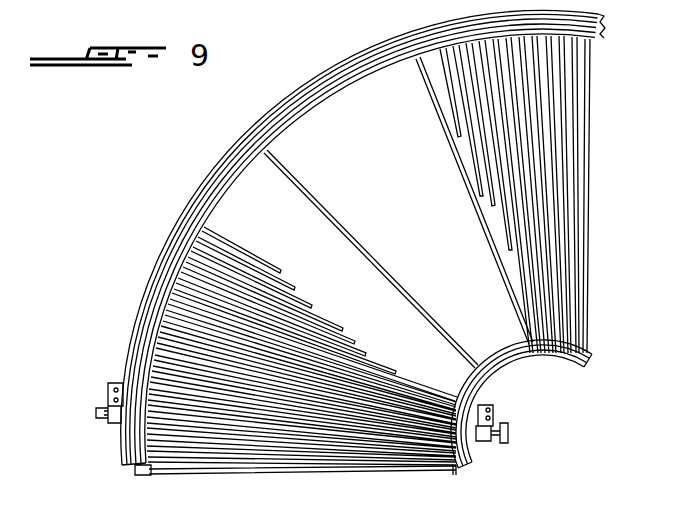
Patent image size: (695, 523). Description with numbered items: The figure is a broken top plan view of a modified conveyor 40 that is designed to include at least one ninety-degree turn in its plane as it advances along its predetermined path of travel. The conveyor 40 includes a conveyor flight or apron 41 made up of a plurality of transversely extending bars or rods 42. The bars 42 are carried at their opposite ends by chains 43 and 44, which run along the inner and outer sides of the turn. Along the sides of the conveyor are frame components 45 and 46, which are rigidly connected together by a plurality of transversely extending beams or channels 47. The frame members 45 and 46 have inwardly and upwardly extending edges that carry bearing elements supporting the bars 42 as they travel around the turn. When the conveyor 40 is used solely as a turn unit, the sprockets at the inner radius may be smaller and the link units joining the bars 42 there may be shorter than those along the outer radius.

The conveyor 40 is at (193, 178).
The conveyor flight or apron 41 is at (580, 234).
The bars or rods 42 is at (568, 134).
The chain 43 is at (185, 230).
The chain 44 is at (400, 57).
The frame component 45 is at (352, 52).
The frame component 46 is at (578, 364).
The beams or channels 47 is at (462, 237).